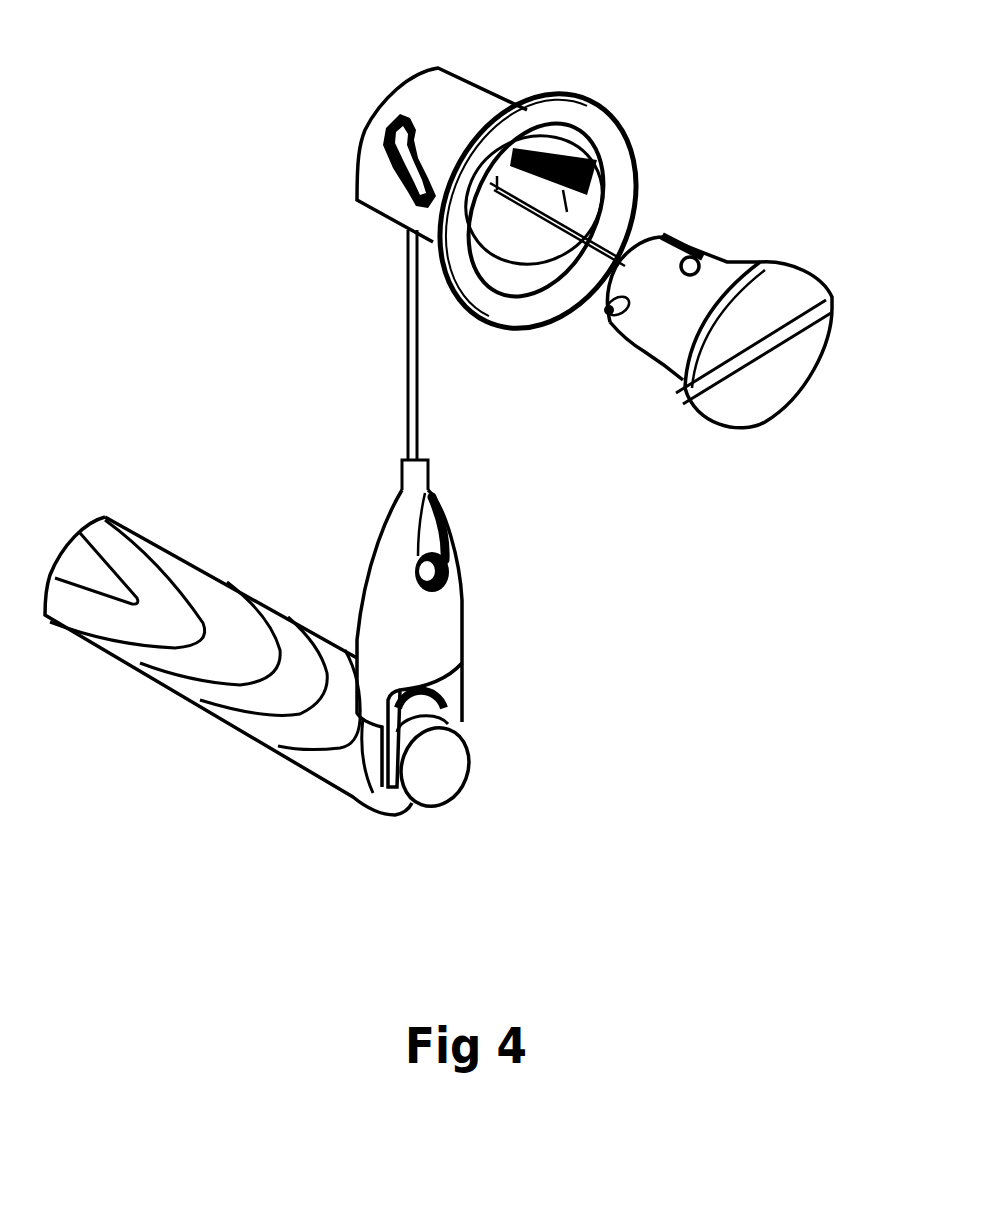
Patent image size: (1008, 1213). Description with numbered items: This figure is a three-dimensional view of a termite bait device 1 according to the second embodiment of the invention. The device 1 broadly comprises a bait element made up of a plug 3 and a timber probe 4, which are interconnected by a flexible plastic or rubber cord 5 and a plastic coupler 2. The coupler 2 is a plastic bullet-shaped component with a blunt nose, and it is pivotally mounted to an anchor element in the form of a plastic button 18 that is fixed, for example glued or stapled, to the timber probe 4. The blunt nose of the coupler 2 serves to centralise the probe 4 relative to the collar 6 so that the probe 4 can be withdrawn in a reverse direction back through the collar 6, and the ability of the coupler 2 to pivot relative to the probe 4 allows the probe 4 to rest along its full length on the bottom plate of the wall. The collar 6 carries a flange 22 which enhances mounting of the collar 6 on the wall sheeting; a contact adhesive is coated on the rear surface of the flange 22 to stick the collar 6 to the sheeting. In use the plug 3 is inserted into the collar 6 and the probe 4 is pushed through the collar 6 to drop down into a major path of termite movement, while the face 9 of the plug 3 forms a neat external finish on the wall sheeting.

The device 1 is at (327, 222).
The coupler 2 is at (367, 540).
The plug 3 is at (763, 260).
The timber probe 4 is at (207, 707).
The cord 5 is at (403, 368).
The collar 6 is at (482, 88).
The face 9 is at (768, 383).
The button 18 is at (473, 758).
The flange 22 is at (535, 97).